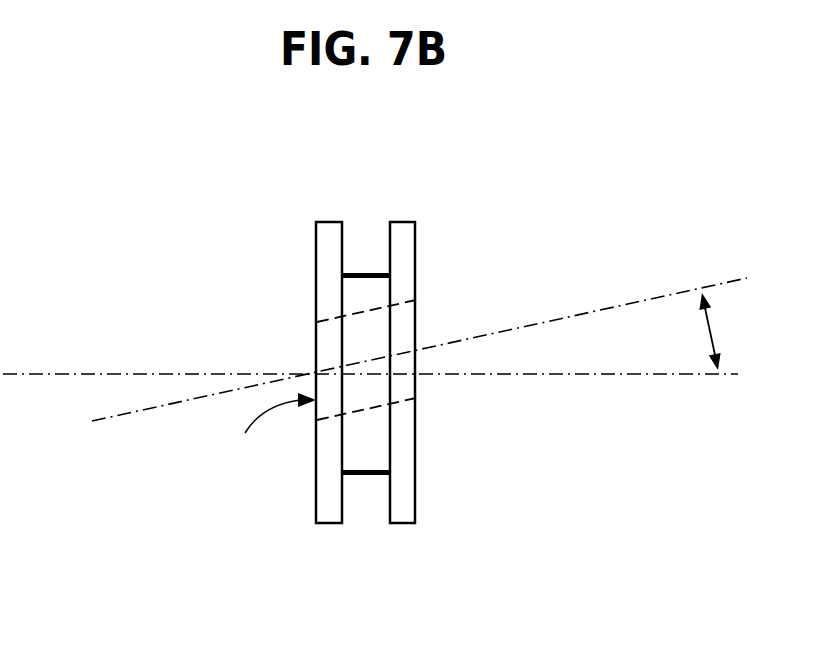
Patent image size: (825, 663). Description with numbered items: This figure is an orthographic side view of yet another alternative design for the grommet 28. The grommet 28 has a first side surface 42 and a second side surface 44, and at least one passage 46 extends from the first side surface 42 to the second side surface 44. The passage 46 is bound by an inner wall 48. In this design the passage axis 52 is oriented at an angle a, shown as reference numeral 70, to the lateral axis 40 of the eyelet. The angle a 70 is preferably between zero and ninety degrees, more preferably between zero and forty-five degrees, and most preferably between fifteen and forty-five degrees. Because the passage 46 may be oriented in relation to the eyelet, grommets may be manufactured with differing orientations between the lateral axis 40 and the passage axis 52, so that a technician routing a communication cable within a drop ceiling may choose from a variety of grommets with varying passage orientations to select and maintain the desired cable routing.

The grommet 28 is at (366, 384).
The first side surface 42 is at (316, 470).
The second side surface 44 is at (415, 470).
The inner wall 48 is at (318, 322).
The passage 46 is at (270, 429).
The passage axis 52 is at (525, 326).
The lateral axis 40 is at (572, 374).
The angle a 70 is at (717, 328).